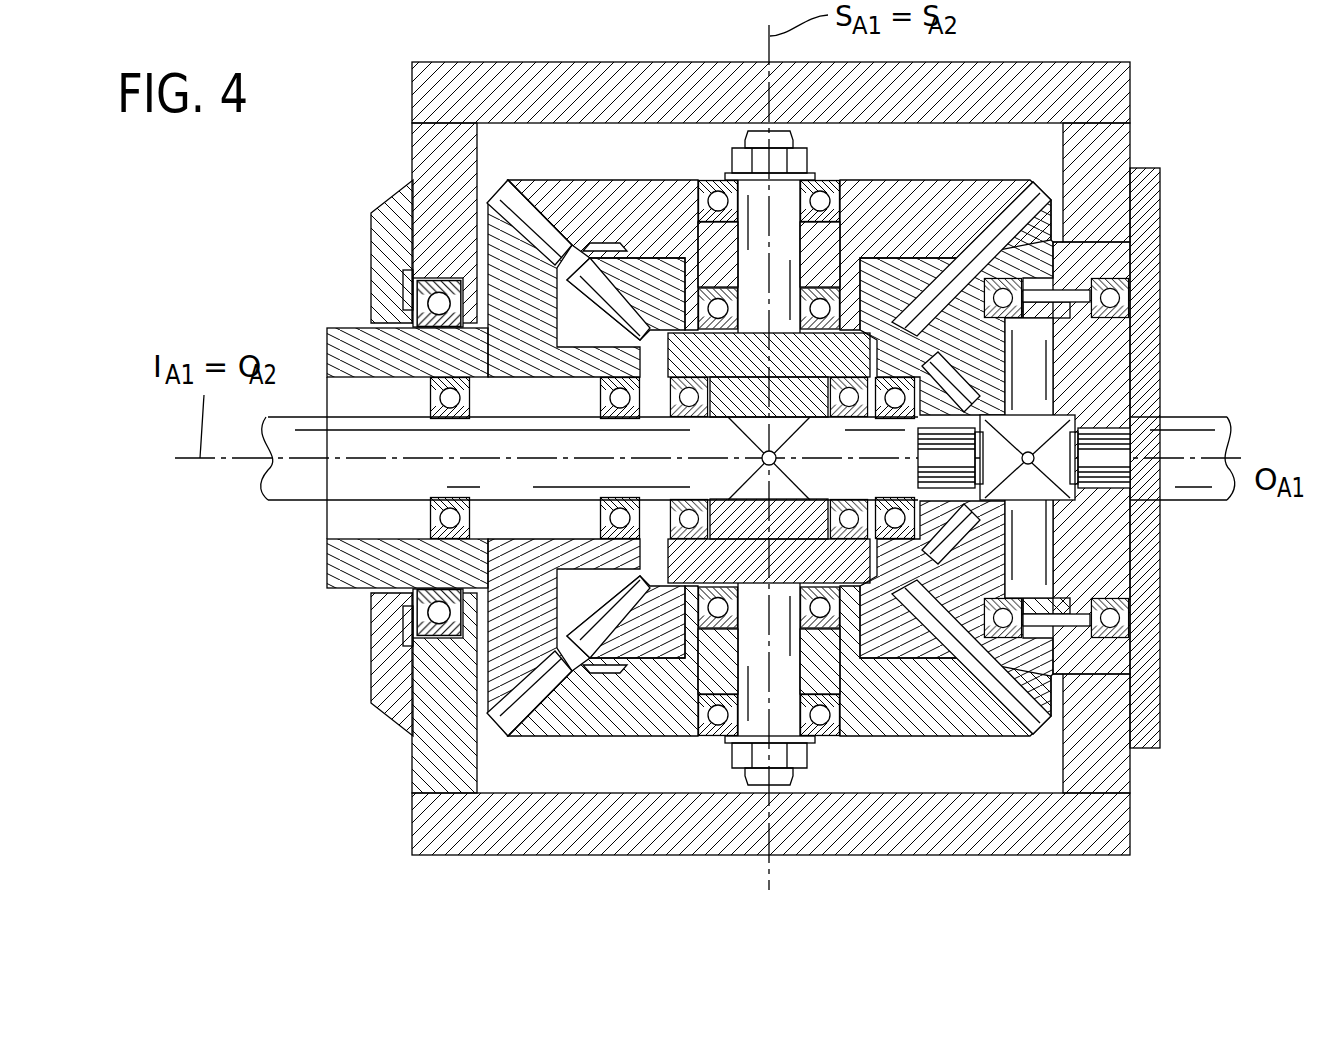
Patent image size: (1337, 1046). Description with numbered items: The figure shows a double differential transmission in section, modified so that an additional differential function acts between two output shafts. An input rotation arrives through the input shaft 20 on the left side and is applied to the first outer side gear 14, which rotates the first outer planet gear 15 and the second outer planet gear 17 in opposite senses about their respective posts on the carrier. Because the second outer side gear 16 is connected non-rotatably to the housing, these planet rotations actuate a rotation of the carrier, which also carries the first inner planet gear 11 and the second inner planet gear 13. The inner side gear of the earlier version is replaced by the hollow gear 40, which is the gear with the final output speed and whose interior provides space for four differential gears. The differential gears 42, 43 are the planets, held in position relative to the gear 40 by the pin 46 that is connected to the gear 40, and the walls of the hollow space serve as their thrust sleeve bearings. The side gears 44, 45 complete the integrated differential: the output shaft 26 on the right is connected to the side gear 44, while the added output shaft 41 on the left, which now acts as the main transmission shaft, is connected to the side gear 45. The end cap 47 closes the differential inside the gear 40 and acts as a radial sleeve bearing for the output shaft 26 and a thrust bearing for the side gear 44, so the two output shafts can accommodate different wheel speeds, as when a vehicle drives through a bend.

The first inner planet gear 11 is at (645, 290).
The second inner planet gear 13 is at (638, 620).
The first outer side gear 14 is at (430, 680).
The first outer planet gear 15 is at (660, 212).
The second outer side gear 16 is at (1158, 224).
The second outer planet gear 17 is at (560, 725).
The input shaft 20 is at (345, 345).
The output shaft 26 is at (1200, 422).
The gear 40 is at (1160, 315).
The output shaft 41 is at (302, 487).
The differential gear 42 is at (1043, 345).
The differential gear 43 is at (947, 508).
The side gear 44 is at (1155, 522).
The side gear 45 is at (1030, 612).
The pin 46 is at (1105, 253).
The end cap 47 is at (1153, 378).